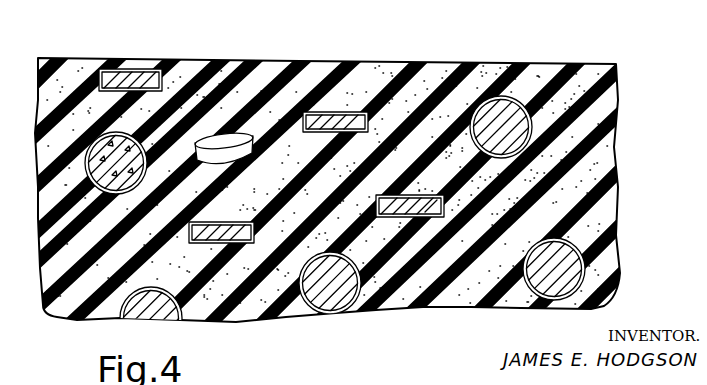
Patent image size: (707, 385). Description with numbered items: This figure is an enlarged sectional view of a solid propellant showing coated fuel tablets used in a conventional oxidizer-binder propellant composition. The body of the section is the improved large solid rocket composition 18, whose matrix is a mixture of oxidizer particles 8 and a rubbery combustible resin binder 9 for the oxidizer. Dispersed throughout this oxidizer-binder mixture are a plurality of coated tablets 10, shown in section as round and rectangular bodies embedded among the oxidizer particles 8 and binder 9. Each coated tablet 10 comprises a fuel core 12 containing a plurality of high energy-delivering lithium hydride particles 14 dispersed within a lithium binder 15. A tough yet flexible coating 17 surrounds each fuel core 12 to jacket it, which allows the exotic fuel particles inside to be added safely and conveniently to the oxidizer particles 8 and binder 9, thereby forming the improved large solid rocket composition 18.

The oxidizer particles 8 is at (452, 63).
The rubbery combustible resin binder 9 is at (391, 70).
The coated tablets 10 is at (130, 67).
The fuel core 12 is at (117, 70).
The lithium hydride particles 14 is at (132, 135).
The lithium binder 15 is at (115, 192).
The coating 17 is at (162, 70).
The large solid rocket composition 18 is at (612, 105).